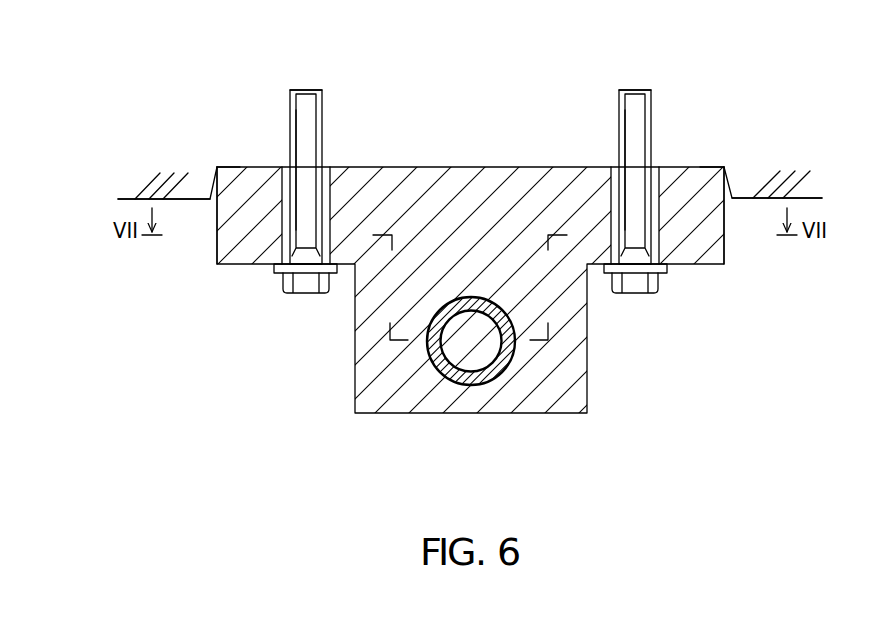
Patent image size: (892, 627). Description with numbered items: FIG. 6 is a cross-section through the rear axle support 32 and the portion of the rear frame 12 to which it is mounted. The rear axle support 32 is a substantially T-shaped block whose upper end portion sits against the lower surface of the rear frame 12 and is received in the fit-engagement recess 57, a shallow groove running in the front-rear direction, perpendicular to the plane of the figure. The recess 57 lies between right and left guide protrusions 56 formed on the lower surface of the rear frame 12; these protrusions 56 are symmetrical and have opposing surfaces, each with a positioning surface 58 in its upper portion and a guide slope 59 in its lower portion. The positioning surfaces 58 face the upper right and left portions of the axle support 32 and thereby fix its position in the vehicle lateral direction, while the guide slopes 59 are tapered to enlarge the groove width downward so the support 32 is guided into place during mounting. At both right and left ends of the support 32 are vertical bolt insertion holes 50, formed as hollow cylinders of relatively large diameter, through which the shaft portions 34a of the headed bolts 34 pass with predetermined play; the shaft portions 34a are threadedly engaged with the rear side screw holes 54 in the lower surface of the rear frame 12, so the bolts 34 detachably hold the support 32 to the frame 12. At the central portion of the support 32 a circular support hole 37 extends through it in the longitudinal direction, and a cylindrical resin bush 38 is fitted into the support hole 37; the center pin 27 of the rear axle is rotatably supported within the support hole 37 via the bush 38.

The rear frame 12 is at (765, 163).
The front center pin 27 is at (440, 352).
The rear axle support 32 is at (556, 416).
The bolt 34 is at (306, 294).
The shaft portion 34a is at (307, 133).
The support hole 37 is at (458, 380).
The bush 38 is at (483, 379).
The bolt insertion hole 50 is at (300, 214).
The rear side screw hole 54 is at (292, 100).
The guide protrusion 56 is at (188, 203).
The fit-engagement recess 57 is at (264, 173).
The positioning surface 58 is at (217, 166).
The guide slope 59 is at (214, 198).